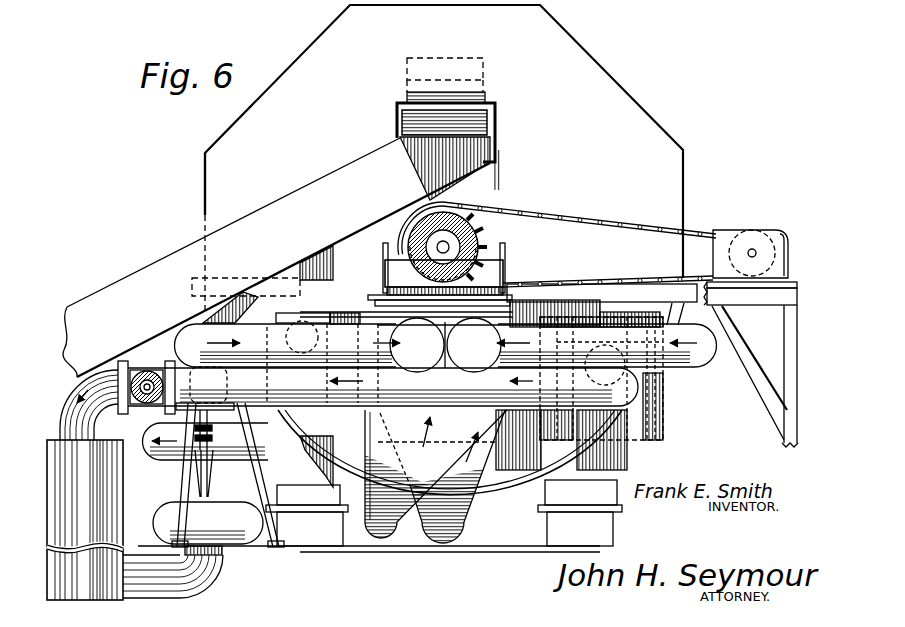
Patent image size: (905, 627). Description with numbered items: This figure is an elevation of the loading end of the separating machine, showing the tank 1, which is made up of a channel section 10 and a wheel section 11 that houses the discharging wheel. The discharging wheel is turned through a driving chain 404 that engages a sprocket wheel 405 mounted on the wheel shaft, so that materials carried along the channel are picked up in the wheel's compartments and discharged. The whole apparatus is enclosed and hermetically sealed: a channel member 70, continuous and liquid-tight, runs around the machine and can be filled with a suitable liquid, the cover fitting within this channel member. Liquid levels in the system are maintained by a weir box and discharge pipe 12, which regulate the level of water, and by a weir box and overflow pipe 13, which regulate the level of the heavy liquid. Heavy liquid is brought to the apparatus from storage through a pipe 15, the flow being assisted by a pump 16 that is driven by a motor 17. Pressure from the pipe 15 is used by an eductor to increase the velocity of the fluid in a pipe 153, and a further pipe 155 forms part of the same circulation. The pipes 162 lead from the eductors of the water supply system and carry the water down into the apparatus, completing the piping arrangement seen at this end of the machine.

The tank 1 is at (211, 180).
The channel section of the tank 10 is at (385, 318).
The wheel section of the tank 11 is at (613, 80).
The weir box and discharge pipe 12 is at (327, 321).
The weir box and overflow pipe 13 is at (353, 405).
The pipe 15 is at (213, 582).
The pump 16 is at (225, 519).
The motor 17 is at (176, 462).
The channel member 70 is at (193, 272).
The pipe 153 is at (470, 528).
The pipe 155 is at (398, 543).
The pipes 162 is at (372, 337).
The driving chain 404 is at (573, 215).
The sprocket wheel 405 is at (481, 223).